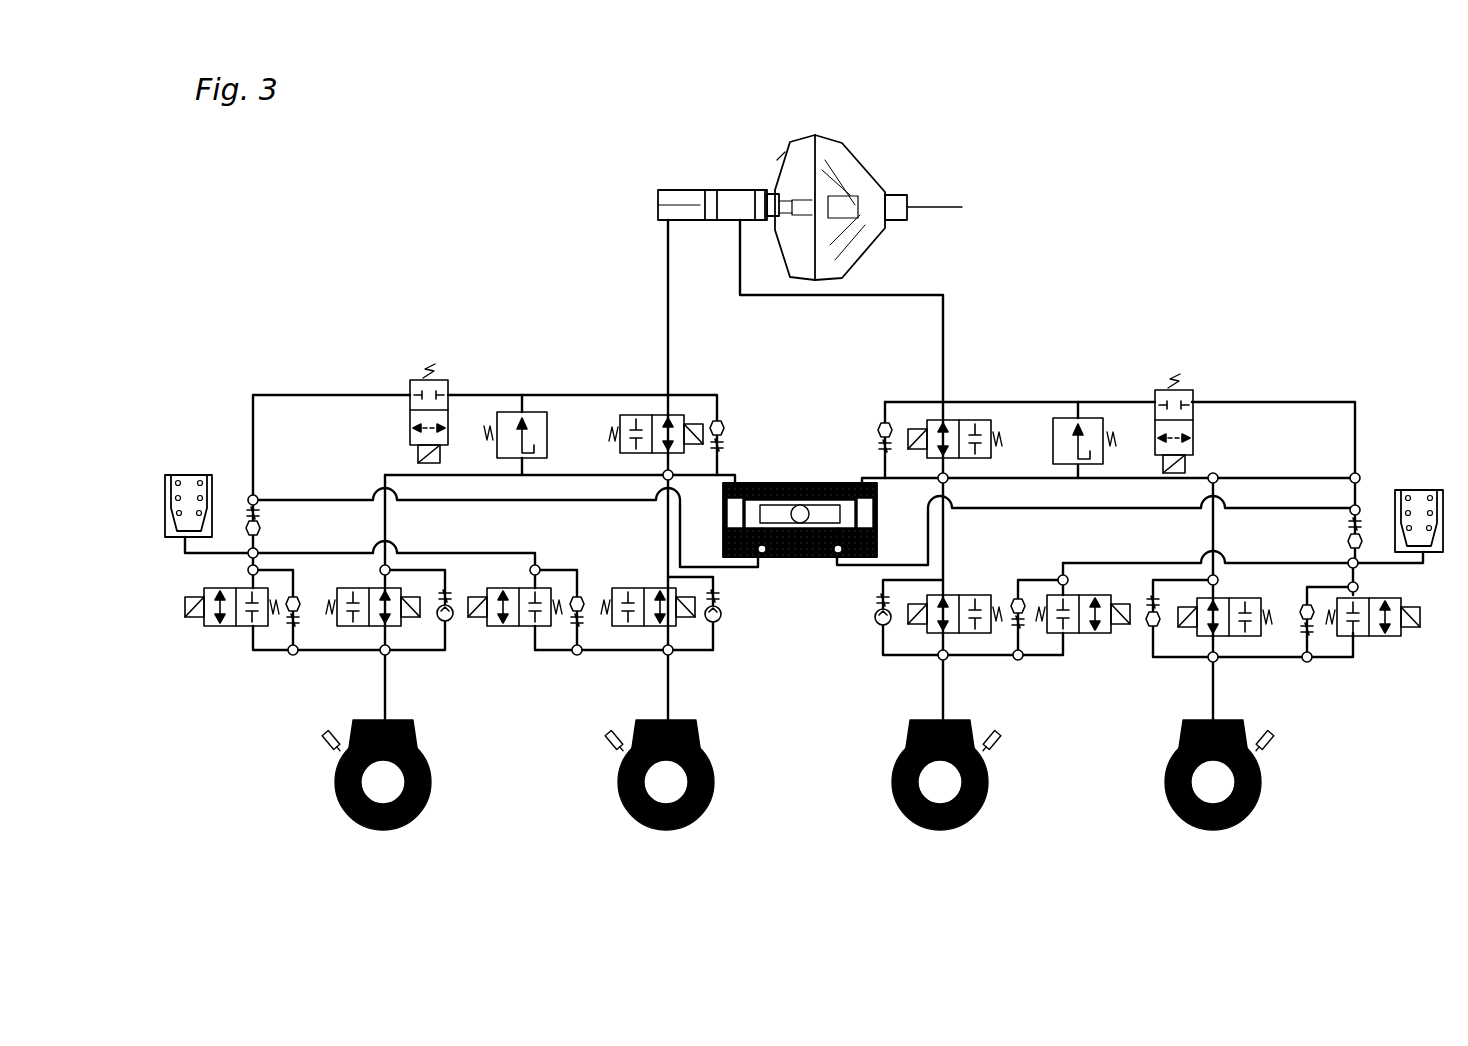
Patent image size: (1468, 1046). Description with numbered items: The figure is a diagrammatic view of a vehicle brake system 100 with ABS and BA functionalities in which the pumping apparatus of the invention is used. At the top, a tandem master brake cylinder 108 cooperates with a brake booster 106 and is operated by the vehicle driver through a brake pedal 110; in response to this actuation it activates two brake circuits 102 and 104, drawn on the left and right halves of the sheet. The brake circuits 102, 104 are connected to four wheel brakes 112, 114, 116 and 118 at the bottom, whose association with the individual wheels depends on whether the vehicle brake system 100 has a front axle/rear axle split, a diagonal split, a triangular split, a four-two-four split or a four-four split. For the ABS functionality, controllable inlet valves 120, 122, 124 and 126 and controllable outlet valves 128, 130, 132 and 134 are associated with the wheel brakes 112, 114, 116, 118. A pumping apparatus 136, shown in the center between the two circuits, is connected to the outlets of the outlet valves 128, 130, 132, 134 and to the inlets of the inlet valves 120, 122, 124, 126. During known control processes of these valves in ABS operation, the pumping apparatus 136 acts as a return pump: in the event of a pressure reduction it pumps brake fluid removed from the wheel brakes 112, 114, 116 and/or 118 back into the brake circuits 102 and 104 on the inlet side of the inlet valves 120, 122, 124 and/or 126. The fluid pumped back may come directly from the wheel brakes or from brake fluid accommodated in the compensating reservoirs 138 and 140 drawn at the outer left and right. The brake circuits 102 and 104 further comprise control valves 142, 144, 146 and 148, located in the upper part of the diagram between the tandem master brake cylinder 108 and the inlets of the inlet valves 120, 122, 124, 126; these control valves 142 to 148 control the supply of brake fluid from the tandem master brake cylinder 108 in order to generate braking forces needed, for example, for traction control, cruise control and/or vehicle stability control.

The vehicle brake system 100 is at (311, 223).
The brake circuit 102 is at (478, 322).
The brake circuit 104 is at (1159, 293).
The brake booster 106 is at (848, 156).
The tandem master brake cylinder 108 is at (697, 190).
The brake pedal 110 is at (962, 192).
The wheel brake 112 is at (415, 738).
The wheel brake 114 is at (700, 738).
The wheel brake 116 is at (973, 733).
The wheel brake 118 is at (1233, 729).
The inlet valve 120 is at (400, 627).
The inlet valve 122 is at (633, 630).
The inlet valve 124 is at (932, 633).
The inlet valve 126 is at (1202, 636).
The outlet valve 128 is at (233, 626).
The outlet valve 130 is at (502, 627).
The outlet valve 132 is at (1067, 635).
The outlet valve 134 is at (1373, 637).
The pumping apparatus 136 is at (802, 568).
The compensating reservoir 138 is at (190, 475).
The compensating reservoir 140 is at (1423, 490).
The control valve 142 is at (450, 383).
The control valve 144 is at (635, 415).
The control valve 146 is at (928, 418).
The control valve 148 is at (1195, 403).